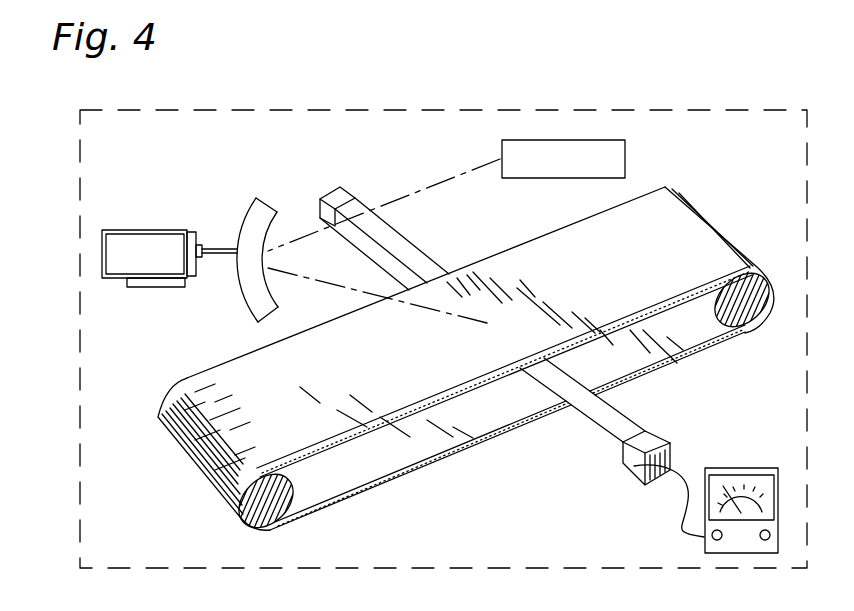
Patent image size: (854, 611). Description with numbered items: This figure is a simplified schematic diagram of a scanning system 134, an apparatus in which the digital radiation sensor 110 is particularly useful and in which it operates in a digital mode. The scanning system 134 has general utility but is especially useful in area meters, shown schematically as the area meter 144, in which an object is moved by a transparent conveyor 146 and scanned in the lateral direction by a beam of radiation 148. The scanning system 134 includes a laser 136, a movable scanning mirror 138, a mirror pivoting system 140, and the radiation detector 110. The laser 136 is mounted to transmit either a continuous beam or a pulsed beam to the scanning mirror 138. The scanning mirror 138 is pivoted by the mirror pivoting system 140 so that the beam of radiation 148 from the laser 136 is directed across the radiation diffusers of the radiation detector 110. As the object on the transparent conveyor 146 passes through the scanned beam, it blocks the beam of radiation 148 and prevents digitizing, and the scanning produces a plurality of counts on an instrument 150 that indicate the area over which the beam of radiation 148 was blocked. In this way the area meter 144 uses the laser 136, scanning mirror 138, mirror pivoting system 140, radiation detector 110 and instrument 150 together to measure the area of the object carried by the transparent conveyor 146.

The digital radiation sensor 110 is at (636, 410).
The scanning system 134 is at (447, 542).
The laser 136 is at (625, 162).
The movable scanning mirror 138 is at (312, 168).
The mirror pivoting system 140 is at (194, 182).
The area meter 144 is at (86, 228).
The transparent conveyor 146 is at (455, 364).
The beam of radiation 148 is at (330, 286).
The instrument 150 is at (778, 432).